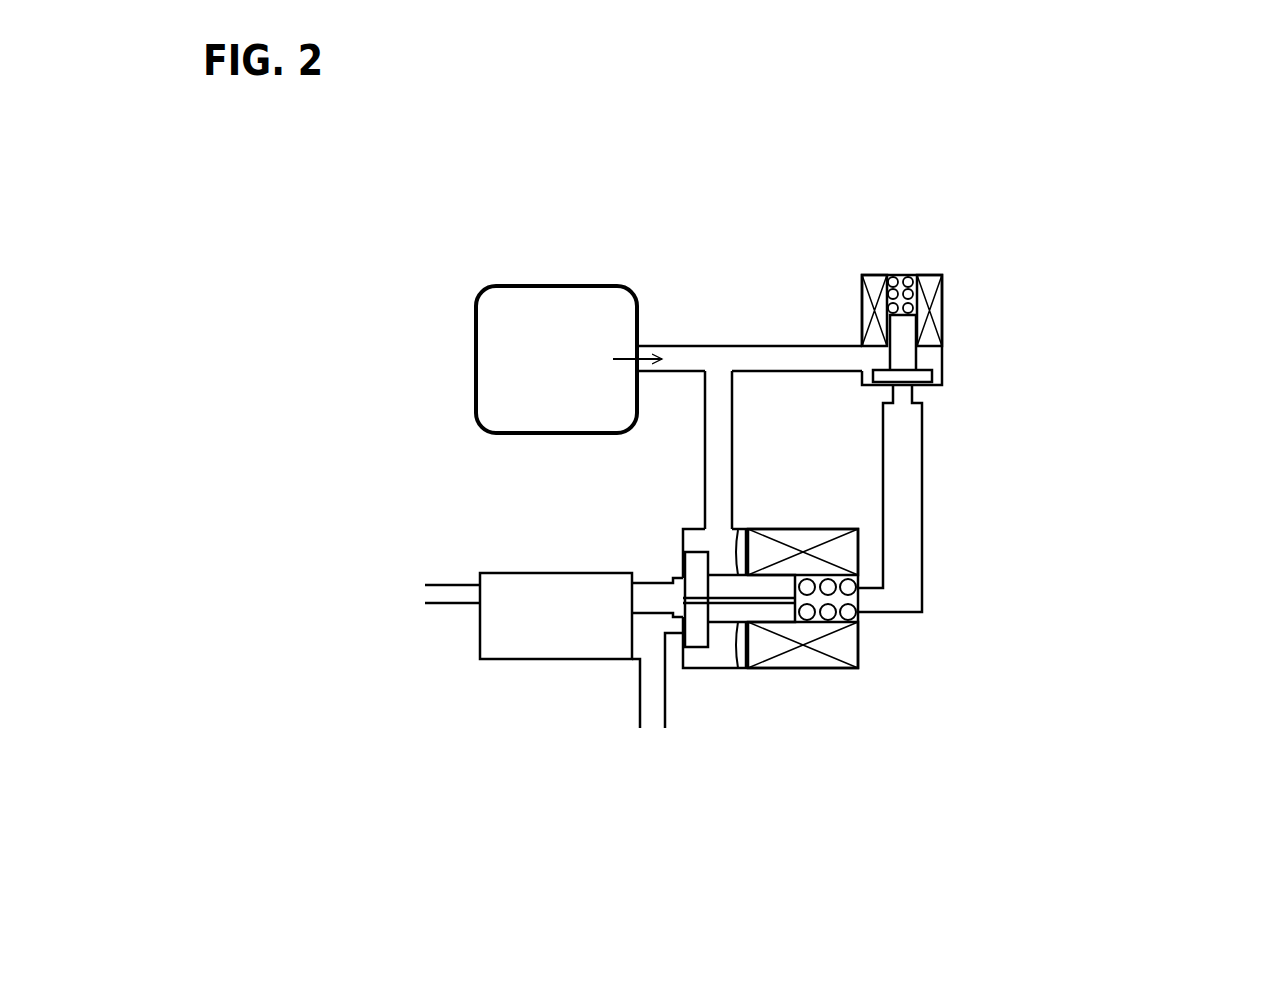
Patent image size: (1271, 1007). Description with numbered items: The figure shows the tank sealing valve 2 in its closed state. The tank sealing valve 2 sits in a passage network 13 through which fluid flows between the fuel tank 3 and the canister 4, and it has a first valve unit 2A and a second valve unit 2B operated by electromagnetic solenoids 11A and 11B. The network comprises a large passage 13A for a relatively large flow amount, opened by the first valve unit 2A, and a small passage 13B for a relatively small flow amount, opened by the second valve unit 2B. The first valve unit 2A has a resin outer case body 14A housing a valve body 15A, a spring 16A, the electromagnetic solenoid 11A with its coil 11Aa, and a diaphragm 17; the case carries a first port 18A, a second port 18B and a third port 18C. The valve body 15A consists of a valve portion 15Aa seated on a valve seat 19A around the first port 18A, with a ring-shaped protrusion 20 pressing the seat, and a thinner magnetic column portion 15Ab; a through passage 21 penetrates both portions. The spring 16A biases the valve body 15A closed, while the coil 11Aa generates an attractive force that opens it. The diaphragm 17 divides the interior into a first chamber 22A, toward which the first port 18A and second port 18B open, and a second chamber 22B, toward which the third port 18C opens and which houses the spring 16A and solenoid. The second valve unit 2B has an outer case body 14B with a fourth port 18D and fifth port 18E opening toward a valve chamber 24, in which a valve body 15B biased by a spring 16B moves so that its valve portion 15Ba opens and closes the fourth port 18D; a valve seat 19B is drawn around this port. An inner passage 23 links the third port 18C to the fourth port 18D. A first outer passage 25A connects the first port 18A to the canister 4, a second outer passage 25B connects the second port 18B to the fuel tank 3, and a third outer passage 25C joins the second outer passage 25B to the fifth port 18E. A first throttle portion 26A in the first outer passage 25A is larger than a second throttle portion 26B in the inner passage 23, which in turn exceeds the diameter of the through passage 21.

The tank sealing valve 2 is at (1172, 155).
The first valve unit 2A is at (783, 669).
The second valve unit 2B is at (948, 314).
The fuel tank 3 is at (492, 360).
The canister 4 is at (507, 630).
The electromagnetic solenoid 11A is at (934, 584).
The coil 11Aa is at (862, 500).
The electromagnetic solenoid 11B is at (935, 283).
The passage network 13 is at (805, 469).
The large passage 13A is at (652, 411).
The small passage 13B is at (1013, 515).
The outer case body 14A is at (717, 672).
The outer case body 14B is at (950, 370).
The valve body 15A is at (762, 636).
The valve portion 15Aa is at (697, 557).
The column portion 15Ab is at (800, 622).
The valve body 15B is at (1012, 338).
The valve portion 15Ba is at (943, 350).
The spring 16A is at (825, 613).
The spring 16B is at (890, 275).
The diaphragm 17 is at (733, 650).
The first port 18A is at (680, 590).
The second port 18B is at (718, 530).
The third port 18C is at (856, 598).
The fourth port 18D is at (870, 395).
The fifth port 18E is at (862, 362).
The valve seat 19A is at (703, 650).
The second valve seat 19B is at (943, 382).
The protrusion 20 is at (668, 655).
The through passage 21 is at (783, 613).
The first chamber 22A is at (712, 660).
The second chamber 22B is at (858, 630).
The inner passage 23 is at (913, 497).
The valve chamber 24 is at (875, 355).
The first outer passage 25A is at (642, 592).
The second outer passage 25B is at (749, 450).
The third outer passage 25C is at (778, 360).
The first throttle portion 26A is at (640, 612).
The second throttle portion 26B is at (920, 398).